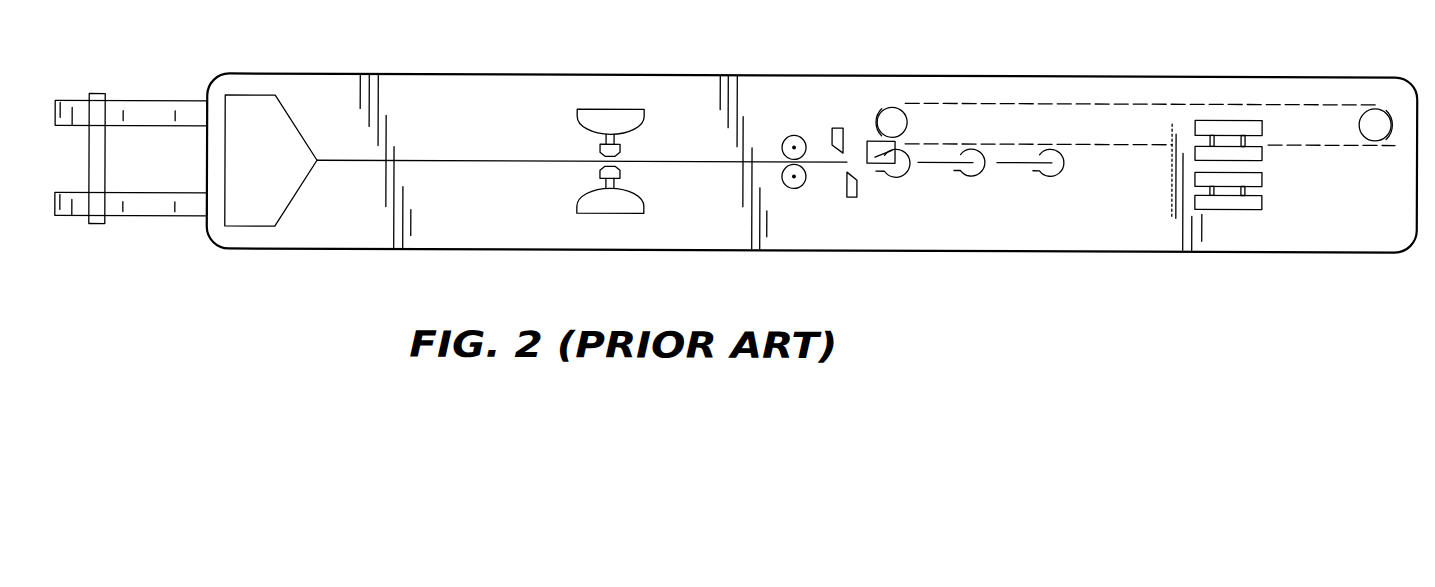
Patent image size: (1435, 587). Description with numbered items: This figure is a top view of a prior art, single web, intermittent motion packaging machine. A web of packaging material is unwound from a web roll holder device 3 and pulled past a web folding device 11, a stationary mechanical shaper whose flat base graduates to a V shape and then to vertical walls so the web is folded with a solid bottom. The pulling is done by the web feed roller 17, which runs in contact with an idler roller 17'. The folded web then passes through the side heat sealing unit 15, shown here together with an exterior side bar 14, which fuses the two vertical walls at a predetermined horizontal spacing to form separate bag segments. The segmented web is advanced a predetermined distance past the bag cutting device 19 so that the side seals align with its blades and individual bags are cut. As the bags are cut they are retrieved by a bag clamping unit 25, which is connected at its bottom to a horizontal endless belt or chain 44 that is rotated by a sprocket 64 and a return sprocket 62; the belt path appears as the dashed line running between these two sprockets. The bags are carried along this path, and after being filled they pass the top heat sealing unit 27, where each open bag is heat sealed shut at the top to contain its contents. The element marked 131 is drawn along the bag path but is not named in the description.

The web roll holder device 3 is at (97, 96).
The web folding device 11 is at (278, 137).
The exterior side bar 14 is at (609, 109).
The side heat sealing unit 15 is at (613, 214).
The idler roller 17' is at (805, 120).
The web feed roller 17 is at (805, 201).
The bag cutting device 19 is at (851, 198).
The return sprocket 62 is at (891, 122).
The bag clamping unit 25 is at (896, 177).
The head 131 is at (942, 165).
The horizontal endless belt or chain 44 is at (1085, 104).
The sprocket 64 is at (1382, 130).
The top heat sealing unit 27 is at (1222, 209).